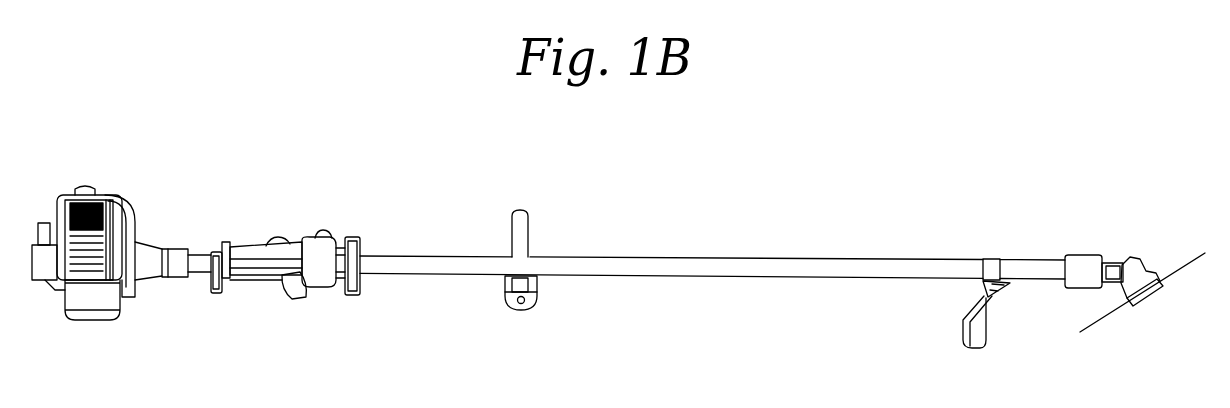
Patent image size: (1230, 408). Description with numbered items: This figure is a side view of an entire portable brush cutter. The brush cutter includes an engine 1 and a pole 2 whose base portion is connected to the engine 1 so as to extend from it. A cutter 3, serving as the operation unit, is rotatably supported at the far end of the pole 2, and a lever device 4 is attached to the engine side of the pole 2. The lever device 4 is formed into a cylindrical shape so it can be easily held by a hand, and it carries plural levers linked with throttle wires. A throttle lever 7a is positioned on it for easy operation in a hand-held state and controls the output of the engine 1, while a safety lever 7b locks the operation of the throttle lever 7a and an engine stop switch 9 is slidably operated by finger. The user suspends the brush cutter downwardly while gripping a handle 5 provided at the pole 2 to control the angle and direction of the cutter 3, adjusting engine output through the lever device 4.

The engine 1 is at (104, 196).
The pole 2 is at (838, 258).
The cutter 3 is at (1193, 252).
The lever device 4 is at (337, 240).
The handle 5 is at (516, 237).
The throttle lever 7a is at (305, 297).
The safety lever 7b is at (276, 243).
The engine stop switch 9 is at (321, 235).